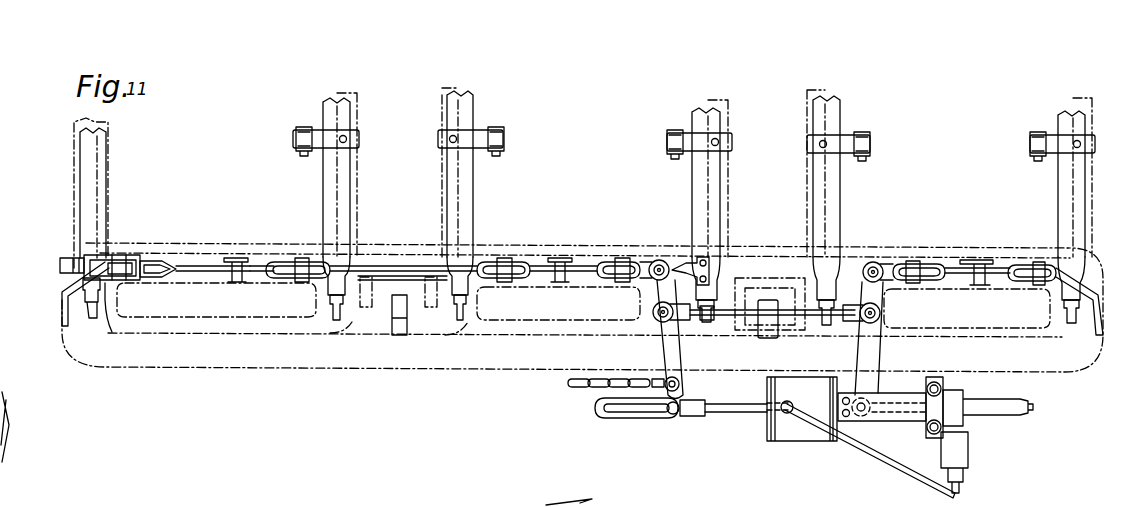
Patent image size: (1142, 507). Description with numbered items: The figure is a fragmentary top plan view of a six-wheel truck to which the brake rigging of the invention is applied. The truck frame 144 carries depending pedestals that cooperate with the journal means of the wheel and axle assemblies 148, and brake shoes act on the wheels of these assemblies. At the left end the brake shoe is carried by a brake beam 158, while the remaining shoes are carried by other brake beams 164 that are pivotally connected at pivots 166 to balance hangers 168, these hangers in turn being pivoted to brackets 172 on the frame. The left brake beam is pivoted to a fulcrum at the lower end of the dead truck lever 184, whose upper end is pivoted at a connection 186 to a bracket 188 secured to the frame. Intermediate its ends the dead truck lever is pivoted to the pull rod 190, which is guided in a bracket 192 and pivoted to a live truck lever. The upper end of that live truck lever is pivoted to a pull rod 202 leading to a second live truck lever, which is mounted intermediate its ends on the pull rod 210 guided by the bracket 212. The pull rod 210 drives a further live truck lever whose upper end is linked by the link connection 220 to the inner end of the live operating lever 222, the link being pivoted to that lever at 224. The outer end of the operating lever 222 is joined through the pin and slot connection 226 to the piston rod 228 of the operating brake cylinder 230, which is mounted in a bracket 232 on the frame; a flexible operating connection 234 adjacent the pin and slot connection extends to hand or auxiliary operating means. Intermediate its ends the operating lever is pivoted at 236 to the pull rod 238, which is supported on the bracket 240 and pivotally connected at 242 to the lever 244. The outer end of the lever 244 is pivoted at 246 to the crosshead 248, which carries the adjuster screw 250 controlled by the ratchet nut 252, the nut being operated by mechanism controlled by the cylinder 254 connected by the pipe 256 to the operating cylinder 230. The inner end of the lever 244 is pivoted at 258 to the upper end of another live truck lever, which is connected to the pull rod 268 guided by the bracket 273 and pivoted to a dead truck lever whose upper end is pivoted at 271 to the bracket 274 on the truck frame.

The truck frame 144 is at (394, 401).
The wheel and axle assemblies 148 is at (254, 312).
The brake beam 158 is at (107, 174).
The brake beams 164 is at (357, 186).
The pivotal connection 166 is at (113, 333).
The balance hangers 168 is at (295, 139).
The brackets 172 is at (316, 136).
The dead truck lever 184 is at (142, 260).
The pivotal connection 186 is at (122, 256).
The bracket 188 is at (62, 285).
The pull rod 190 is at (203, 262).
The bracket 192 is at (236, 282).
The pull rod 202 is at (401, 262).
The pull rod 210 is at (577, 262).
The bracket 212 is at (560, 277).
The link connection 220 is at (625, 262).
The live operating lever 222 is at (660, 356).
The pivotal connection 224 is at (664, 259).
The pin and slot connection 226 is at (673, 414).
The piston rod 228 is at (713, 413).
The operating brake cylinder 230 is at (790, 437).
The bracket 232 is at (831, 378).
The flexible operating connection 234 is at (584, 388).
The pivotal connection 236 is at (652, 318).
The pull rod 238 is at (724, 308).
The bracket 240 is at (770, 300).
The pivotal connection 242 is at (883, 312).
The lever 244 is at (880, 393).
The pivotal connection 246 is at (862, 418).
The crosshead 248 is at (866, 404).
The adjuster screw 250 is at (915, 414).
The ratchet nut 252 is at (1006, 416).
The cylinder 254 is at (969, 461).
The pipe 256 is at (899, 481).
The pivotal connection 258 is at (881, 262).
The pull rod 268 is at (939, 264).
The pivotal connection 271 is at (1030, 262).
The bracket 273 is at (980, 286).
The bracket 274 is at (1098, 293).